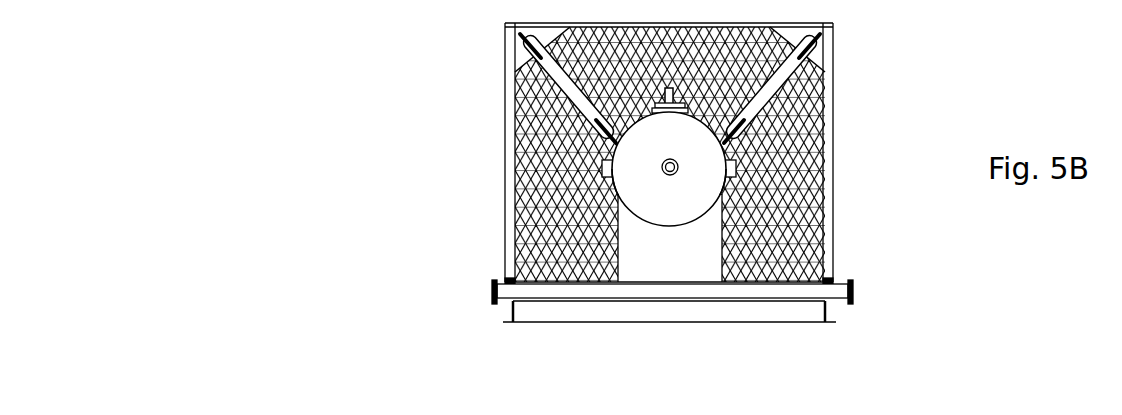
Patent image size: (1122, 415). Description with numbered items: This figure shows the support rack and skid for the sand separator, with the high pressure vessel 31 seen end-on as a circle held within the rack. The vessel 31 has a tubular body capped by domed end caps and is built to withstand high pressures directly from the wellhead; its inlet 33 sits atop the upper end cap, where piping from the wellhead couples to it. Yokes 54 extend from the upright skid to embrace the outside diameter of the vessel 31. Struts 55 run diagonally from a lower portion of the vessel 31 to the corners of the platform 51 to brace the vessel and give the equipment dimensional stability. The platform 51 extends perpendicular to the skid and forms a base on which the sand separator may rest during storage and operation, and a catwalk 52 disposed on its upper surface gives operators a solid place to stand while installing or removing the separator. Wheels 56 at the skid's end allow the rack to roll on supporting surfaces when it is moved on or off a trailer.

The high pressure vessel 31 is at (512, 95).
The inlet 33 is at (672, 158).
The platform 51 is at (830, 120).
The catwalk 52 is at (830, 155).
The yokes 54 is at (713, 240).
The struts 55 is at (833, 72).
The wheels 56 is at (490, 282).